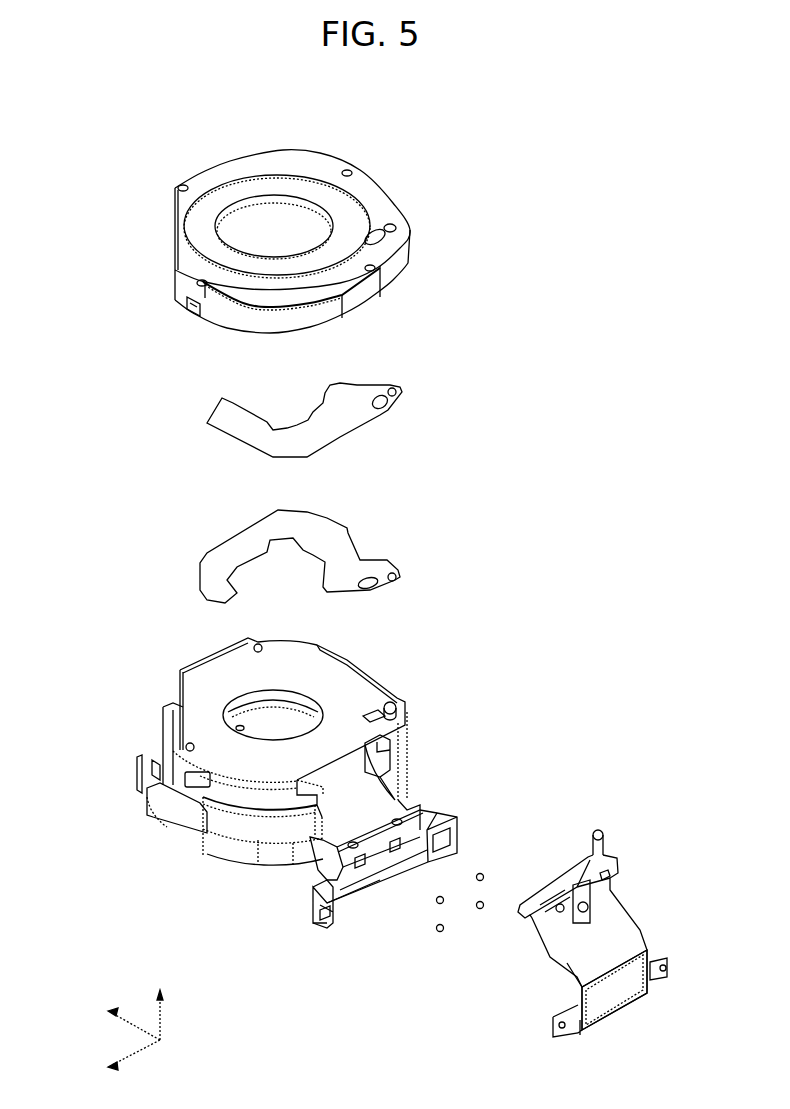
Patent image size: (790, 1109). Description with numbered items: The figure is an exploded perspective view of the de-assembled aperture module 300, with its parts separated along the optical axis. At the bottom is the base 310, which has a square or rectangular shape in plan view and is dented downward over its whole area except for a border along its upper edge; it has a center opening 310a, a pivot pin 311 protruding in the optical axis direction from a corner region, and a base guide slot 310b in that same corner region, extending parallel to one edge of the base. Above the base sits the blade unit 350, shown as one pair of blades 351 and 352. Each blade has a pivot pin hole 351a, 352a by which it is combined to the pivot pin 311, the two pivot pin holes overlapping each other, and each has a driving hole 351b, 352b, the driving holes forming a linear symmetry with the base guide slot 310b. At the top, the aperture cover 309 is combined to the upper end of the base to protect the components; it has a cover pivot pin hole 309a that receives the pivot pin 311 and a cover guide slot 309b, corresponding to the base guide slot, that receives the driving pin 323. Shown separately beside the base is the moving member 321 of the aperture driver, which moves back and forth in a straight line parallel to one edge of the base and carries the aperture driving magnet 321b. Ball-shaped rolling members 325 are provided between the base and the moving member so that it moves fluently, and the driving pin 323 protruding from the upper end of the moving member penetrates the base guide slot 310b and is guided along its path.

The aperture module 300 is at (393, 157).
The aperture cover 309 is at (388, 203).
The cover pivot pin hole 309a is at (400, 228).
The cover guide slot 309b is at (385, 242).
The blade unit 350 is at (96, 398).
The blade 352 is at (208, 411).
The pivot pin hole 352a is at (402, 388).
The driving hole 352b is at (392, 401).
The blade 351 is at (208, 545).
The pivot pin hole 351a is at (401, 574).
The driving hole 351b is at (393, 586).
The base 310 is at (152, 711).
The center opening 310a is at (273, 720).
The base guide slot 310b is at (409, 732).
The pivot pin 311 is at (405, 702).
The rolling members 325 is at (436, 936).
The moving member 321 is at (637, 933).
The aperture driving magnet 321b is at (613, 1000).
The driving pin 323 is at (603, 832).